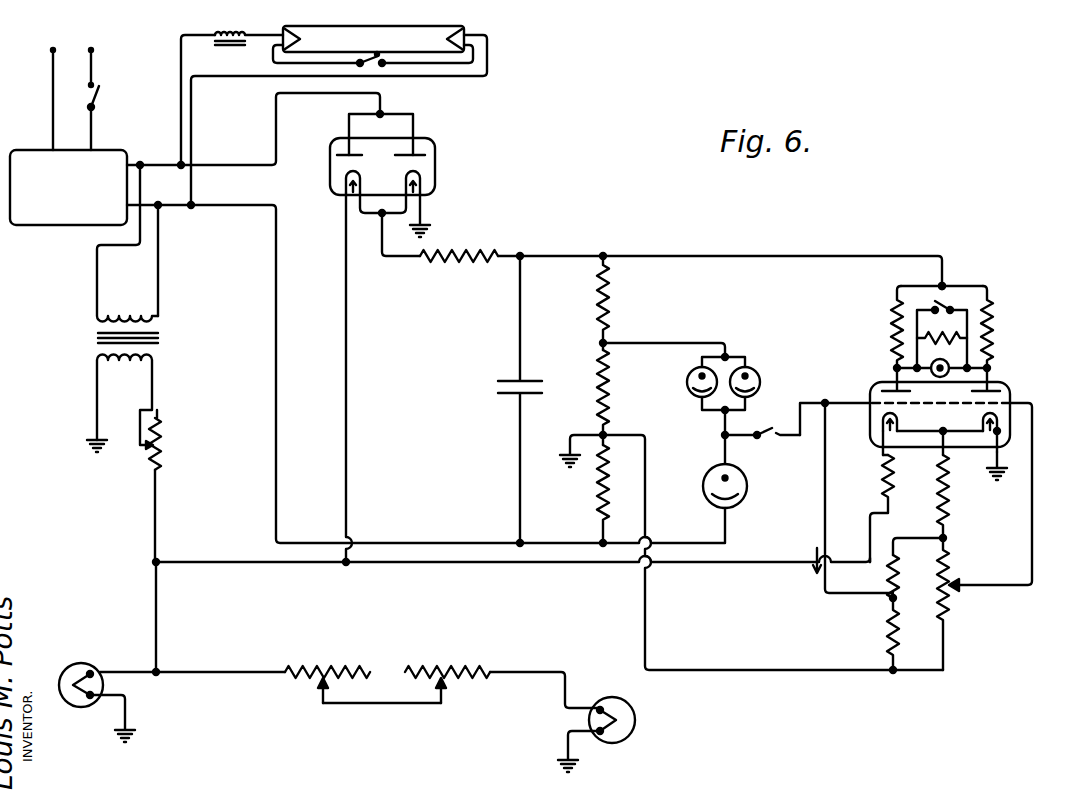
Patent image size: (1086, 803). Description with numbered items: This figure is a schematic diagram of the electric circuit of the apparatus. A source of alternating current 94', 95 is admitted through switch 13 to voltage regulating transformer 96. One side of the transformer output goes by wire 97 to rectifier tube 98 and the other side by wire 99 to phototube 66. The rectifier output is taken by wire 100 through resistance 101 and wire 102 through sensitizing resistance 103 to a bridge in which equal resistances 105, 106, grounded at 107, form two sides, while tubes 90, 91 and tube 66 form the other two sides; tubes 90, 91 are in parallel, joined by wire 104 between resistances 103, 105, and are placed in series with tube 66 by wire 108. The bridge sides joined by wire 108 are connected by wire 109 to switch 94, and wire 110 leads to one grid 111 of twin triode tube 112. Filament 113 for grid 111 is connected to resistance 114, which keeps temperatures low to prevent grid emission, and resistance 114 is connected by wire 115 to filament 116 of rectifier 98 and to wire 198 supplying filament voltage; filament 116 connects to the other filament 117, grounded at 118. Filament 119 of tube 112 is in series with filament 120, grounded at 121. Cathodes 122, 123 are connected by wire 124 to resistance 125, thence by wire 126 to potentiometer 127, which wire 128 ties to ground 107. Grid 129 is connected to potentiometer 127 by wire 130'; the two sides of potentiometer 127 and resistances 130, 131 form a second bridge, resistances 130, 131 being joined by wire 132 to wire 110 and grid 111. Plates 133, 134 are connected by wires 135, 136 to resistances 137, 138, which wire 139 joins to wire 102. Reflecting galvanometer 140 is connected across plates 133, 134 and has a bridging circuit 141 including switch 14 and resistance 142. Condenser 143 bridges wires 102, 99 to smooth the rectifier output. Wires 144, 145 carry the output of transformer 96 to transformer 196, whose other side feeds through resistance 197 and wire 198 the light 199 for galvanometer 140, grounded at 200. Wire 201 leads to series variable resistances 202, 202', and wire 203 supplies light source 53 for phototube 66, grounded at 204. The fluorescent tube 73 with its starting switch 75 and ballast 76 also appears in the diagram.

The switch 13 is at (100, 92).
The switch 14 is at (930, 305).
The light source 53 is at (636, 720).
The phototube 66 is at (748, 486).
The fluorescent tube 73 is at (455, 68).
The starting switch 75 is at (381, 52).
The ballast 76 is at (220, 38).
The tube 90 is at (688, 380).
The tube 91 is at (760, 378).
The switch 94 is at (752, 418).
The source of alternating current 94' is at (67, 89).
The source of alternating current 95 is at (93, 52).
The voltage regulating transformer 96 is at (122, 158).
The wire 97 is at (192, 167).
The rectifier tube 98 is at (437, 165).
The wire 99 is at (278, 395).
The wire 100 is at (378, 258).
The resistance 101 is at (462, 264).
The wire 102 is at (575, 256).
The sensitizing resistance 103 is at (608, 310).
The wire 104 is at (655, 343).
The resistance 105 is at (607, 408).
The resistance 106 is at (598, 500).
The ground 107 is at (572, 430).
The wire 108 is at (722, 445).
The wire 109 is at (760, 440).
The wire 110 is at (800, 440).
The grid 111 is at (912, 405).
The twin triode tube 112 is at (1010, 396).
The filament 113 is at (884, 440).
The resistance 114 is at (885, 485).
The wire 115 is at (760, 562).
The filament 116 is at (343, 185).
The filament 117 is at (423, 185).
The ground 118 is at (428, 213).
The filament 119 is at (962, 438).
The filament 120 is at (1004, 437).
The ground 121 is at (1003, 466).
The cathode 122 is at (899, 425).
The cathode 123 is at (1000, 420).
The wire 124 is at (940, 446).
The resistance 125 is at (947, 497).
The wire 126 is at (947, 541).
The potentiometer 127 is at (950, 602).
The wire 128 is at (850, 672).
The grid 129 is at (982, 425).
The resistance 130 is at (869, 576).
The wire 130' is at (1012, 497).
The resistance 131 is at (888, 635).
The wire 132 is at (850, 598).
The plate 133 is at (878, 392).
The plate 134 is at (992, 386).
The wire 135 is at (892, 378).
The wire 136 is at (990, 380).
The resistance 137 is at (890, 320).
The resistance 138 is at (990, 330).
The wire 139 is at (952, 248).
The galvanometer 140 is at (947, 363).
The bridging circuit 141 is at (950, 290).
The resistance 142 is at (947, 334).
The condenser 143 is at (505, 385).
The wire 144 is at (97, 275).
The wire 145 is at (160, 272).
The transformer 196 is at (160, 338).
The resistance 197 is at (160, 447).
The wire 198 is at (160, 392).
The light 199 is at (76, 707).
The ground 200 is at (128, 722).
The wire 201 is at (215, 672).
The variable resistance 202 is at (363, 669).
The variable resistance 202' is at (449, 669).
The wire 203 is at (567, 683).
The ground 204 is at (565, 745).